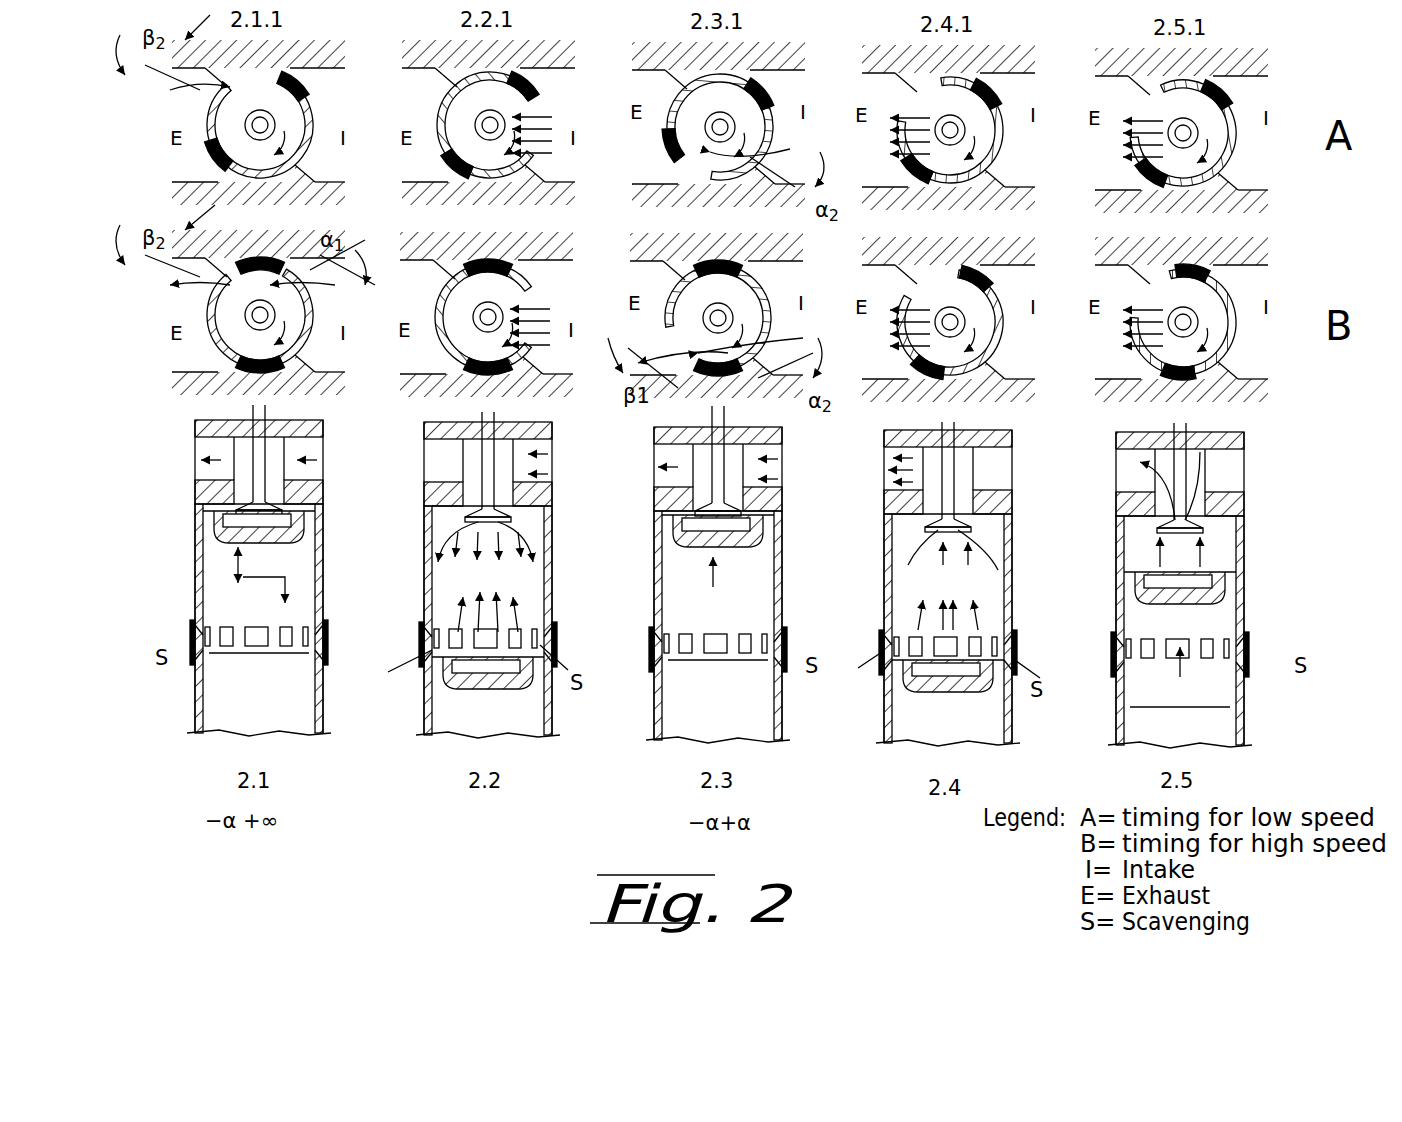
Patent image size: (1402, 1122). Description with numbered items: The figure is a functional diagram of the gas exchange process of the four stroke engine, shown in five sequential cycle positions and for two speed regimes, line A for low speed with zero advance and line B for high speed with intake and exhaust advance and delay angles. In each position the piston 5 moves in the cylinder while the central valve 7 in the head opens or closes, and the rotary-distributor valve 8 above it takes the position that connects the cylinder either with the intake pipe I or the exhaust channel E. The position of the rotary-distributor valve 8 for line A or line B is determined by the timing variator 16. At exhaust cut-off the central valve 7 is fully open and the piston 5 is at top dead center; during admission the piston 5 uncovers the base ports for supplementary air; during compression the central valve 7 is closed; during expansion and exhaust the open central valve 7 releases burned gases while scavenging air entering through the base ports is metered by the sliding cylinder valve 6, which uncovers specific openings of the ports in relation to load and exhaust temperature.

The piston 5 is at (289, 582).
The sliding cylinder valve 6 is at (277, 637).
The central valve 7 is at (216, 481).
The rotary-distributor valve 8 is at (280, 128).
The timing variator 16 is at (735, 93).